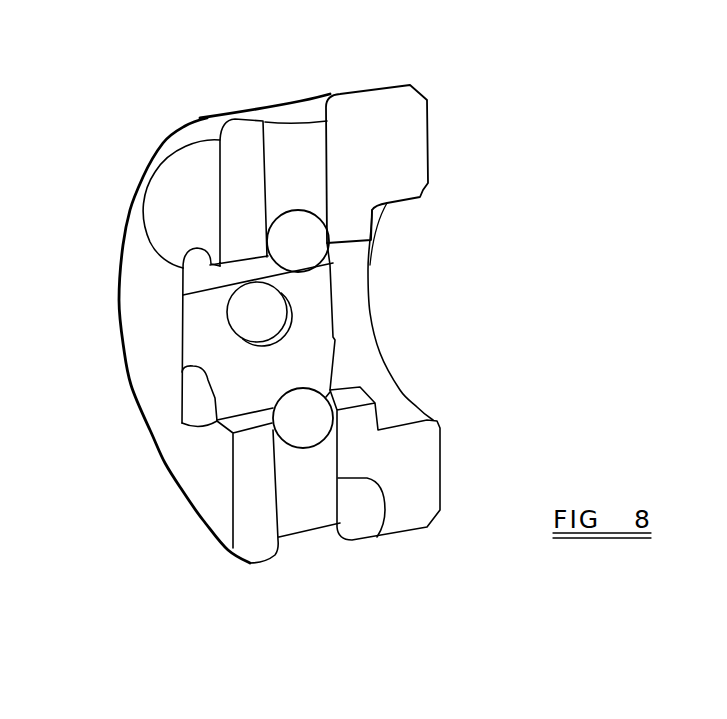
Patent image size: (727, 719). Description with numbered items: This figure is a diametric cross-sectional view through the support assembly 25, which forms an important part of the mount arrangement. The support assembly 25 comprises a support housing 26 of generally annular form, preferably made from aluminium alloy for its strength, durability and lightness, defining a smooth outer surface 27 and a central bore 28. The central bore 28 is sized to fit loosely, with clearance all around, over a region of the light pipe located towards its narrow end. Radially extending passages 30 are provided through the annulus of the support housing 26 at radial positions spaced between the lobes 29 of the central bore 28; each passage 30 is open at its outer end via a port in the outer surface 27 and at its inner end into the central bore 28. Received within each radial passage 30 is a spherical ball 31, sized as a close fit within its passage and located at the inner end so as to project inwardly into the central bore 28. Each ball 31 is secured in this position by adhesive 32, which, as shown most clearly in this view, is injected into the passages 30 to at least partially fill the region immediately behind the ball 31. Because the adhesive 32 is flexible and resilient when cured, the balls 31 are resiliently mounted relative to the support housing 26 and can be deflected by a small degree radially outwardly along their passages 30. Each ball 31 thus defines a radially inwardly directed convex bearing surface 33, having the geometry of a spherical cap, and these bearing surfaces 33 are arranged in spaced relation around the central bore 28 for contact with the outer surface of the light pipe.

The support assembly 25 is at (560, 126).
The support housing 26 is at (380, 120).
The outer surface 27 is at (349, 95).
The central bore 28 is at (404, 314).
The lobes 29 is at (198, 271).
The radially extending passages 30 is at (328, 177).
The spherical ball 31 is at (257, 315).
The adhesive 32 is at (287, 120).
The convex bearing surface 33 is at (263, 379).